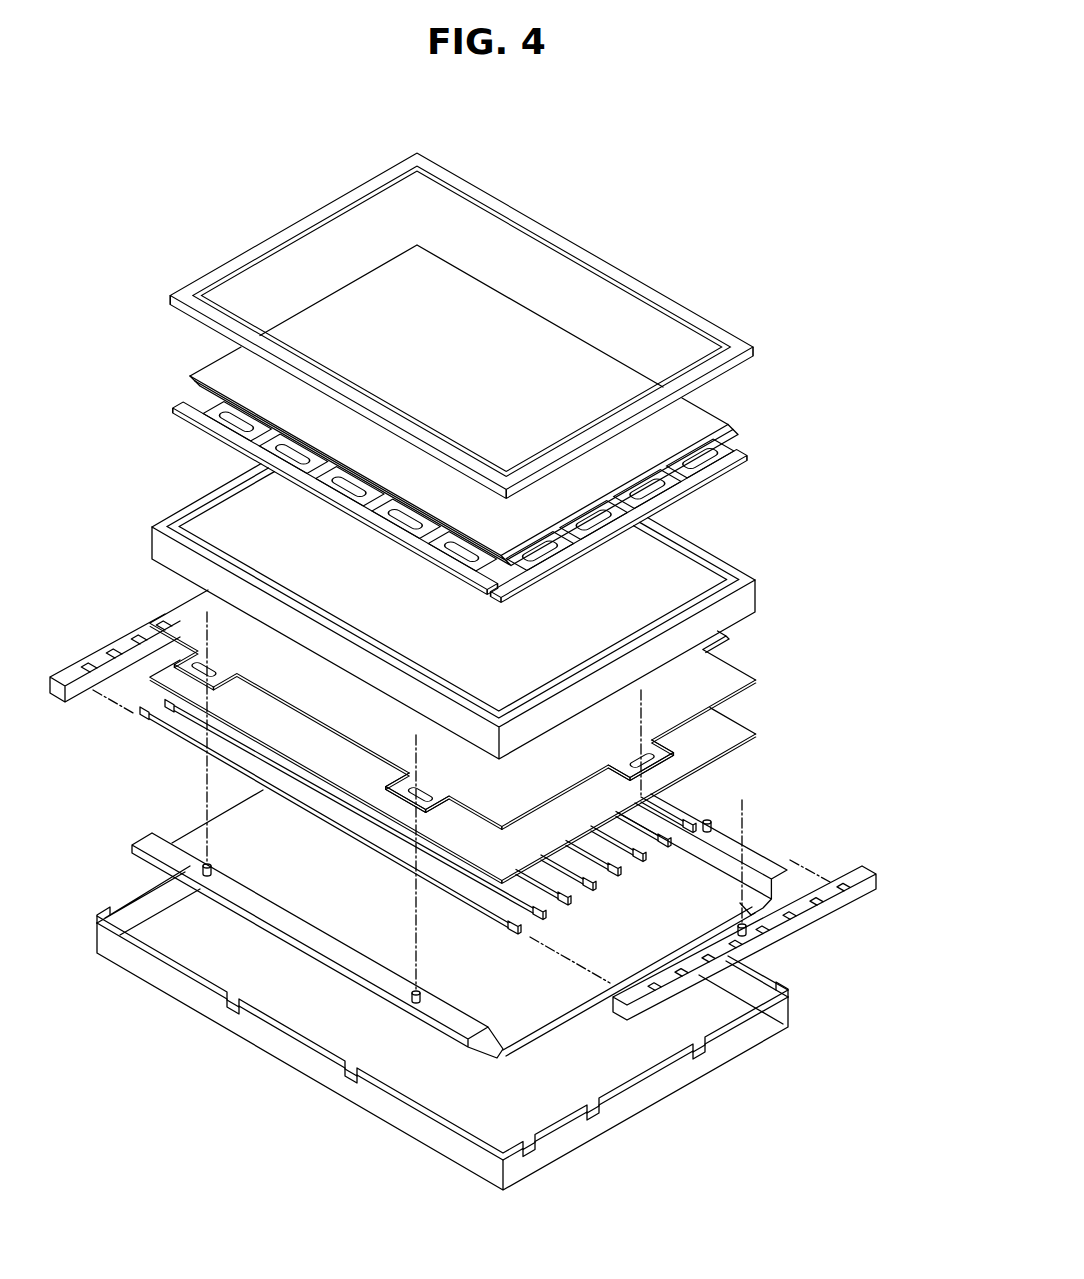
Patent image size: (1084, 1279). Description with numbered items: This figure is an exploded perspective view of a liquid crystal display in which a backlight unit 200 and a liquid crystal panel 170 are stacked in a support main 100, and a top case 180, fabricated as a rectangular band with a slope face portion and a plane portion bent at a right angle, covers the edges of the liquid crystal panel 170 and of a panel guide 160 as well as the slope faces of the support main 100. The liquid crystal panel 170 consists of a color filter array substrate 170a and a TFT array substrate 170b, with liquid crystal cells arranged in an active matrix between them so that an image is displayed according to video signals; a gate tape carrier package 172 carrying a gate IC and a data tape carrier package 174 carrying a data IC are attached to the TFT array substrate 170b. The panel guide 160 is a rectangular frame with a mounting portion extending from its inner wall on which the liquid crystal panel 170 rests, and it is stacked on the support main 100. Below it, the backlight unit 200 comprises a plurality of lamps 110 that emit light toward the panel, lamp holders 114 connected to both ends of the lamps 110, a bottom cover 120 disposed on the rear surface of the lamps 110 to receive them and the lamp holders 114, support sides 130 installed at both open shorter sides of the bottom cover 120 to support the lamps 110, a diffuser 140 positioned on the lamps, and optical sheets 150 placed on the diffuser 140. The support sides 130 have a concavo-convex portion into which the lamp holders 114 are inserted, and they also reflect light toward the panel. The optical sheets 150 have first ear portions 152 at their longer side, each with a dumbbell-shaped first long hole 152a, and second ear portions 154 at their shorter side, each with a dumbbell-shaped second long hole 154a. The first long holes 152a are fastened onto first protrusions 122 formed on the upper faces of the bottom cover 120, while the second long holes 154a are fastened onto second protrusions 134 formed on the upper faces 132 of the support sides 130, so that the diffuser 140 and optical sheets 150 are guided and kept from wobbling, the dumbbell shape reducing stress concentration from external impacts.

The support main 100 is at (468, 1028).
The lamps 110 is at (703, 793).
The lamp holders 114 is at (712, 820).
The bottom cover 120 is at (486, 905).
The first protrusions 122 is at (413, 1000).
The support sides 130 is at (744, 911).
The upper faces of the support sides 132 is at (795, 918).
The second protrusions 134 is at (752, 938).
The diffuser 140 is at (740, 728).
The optical sheets 150 is at (475, 666).
The first ear portions 152 is at (397, 785).
The first long hole 152a is at (423, 788).
The second ear portions 154 is at (668, 752).
The second long hole 154a is at (636, 758).
The panel guide 160 is at (748, 600).
The liquid crystal panel 170 is at (836, 350).
The color filter array substrate 170a is at (700, 407).
The TFT array substrate 170b is at (728, 432).
The gate tape carrier package 172 is at (727, 470).
The data tape carrier package 174 is at (195, 398).
The top case 180 is at (710, 322).
The backlight unit 200 is at (499, 833).